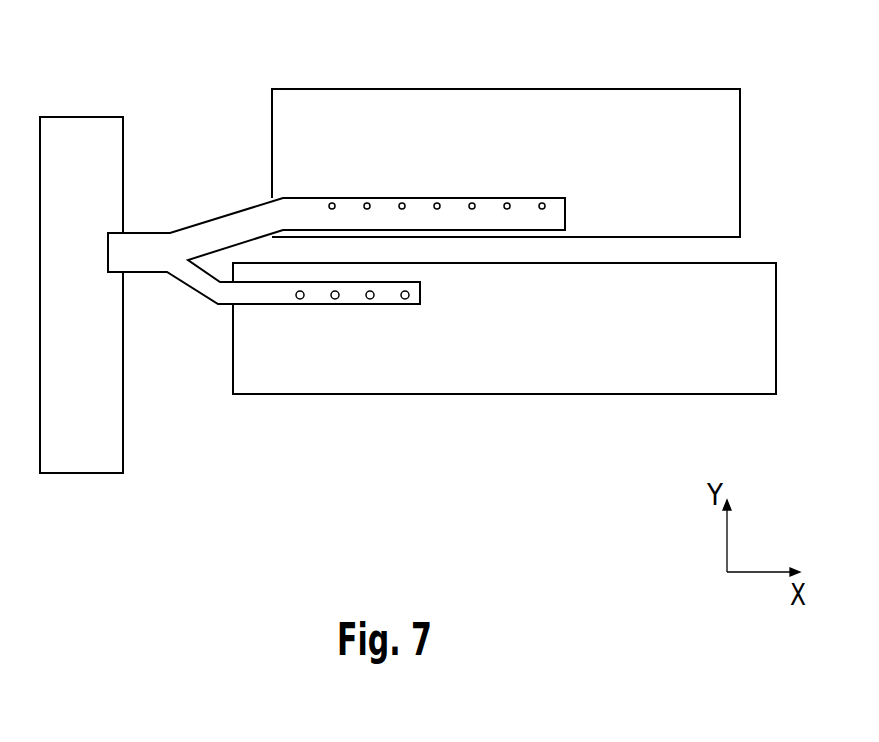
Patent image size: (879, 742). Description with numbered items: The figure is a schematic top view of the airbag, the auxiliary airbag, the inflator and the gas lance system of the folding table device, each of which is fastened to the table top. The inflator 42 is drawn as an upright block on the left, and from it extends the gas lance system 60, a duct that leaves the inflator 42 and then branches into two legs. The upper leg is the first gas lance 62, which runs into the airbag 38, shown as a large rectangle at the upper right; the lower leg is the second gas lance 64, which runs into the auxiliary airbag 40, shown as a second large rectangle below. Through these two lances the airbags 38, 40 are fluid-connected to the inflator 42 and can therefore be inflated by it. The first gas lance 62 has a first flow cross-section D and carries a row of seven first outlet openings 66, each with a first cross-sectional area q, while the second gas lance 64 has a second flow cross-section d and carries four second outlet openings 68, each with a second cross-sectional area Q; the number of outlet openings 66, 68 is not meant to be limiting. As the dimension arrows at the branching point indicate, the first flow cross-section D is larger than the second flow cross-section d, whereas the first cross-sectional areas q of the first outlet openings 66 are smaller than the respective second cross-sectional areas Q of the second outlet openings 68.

The airbag 38 is at (645, 133).
The auxiliary airbag 40 is at (587, 370).
The inflator 42 is at (90, 142).
The gas lance system 60 is at (156, 218).
The first gas lance 62 is at (310, 213).
The second gas lance 64 is at (265, 293).
The first outlet openings 66 is at (437, 203).
The second outlet openings 68 is at (405, 299).
The first flow cross-section D is at (255, 275).
The second flow cross-section d is at (220, 240).